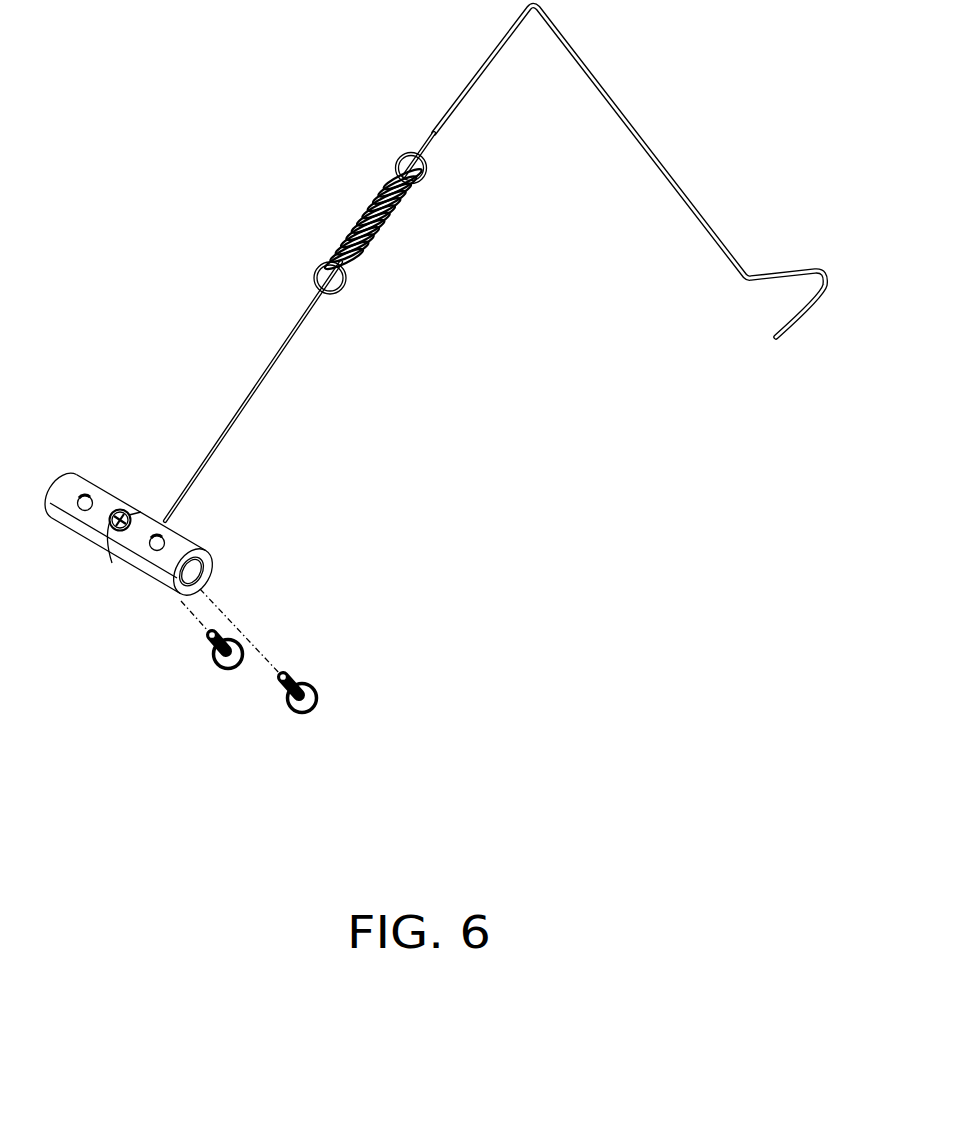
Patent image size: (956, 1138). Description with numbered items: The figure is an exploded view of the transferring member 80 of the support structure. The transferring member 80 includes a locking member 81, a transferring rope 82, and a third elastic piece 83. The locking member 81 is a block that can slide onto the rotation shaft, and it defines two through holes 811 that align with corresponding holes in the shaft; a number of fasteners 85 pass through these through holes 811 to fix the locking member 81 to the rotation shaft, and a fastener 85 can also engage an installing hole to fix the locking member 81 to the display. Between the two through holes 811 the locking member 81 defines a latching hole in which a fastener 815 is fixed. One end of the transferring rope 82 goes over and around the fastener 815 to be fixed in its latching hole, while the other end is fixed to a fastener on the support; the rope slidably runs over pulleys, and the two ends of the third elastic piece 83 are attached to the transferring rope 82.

The transferring member 80 is at (291, 68).
The transferring rope 82 is at (636, 125).
The third elastic piece 83 is at (353, 217).
The locking member 81 is at (150, 570).
The through holes 811 is at (163, 540).
The fastener 815 is at (118, 506).
The fasteners 85 is at (306, 686).